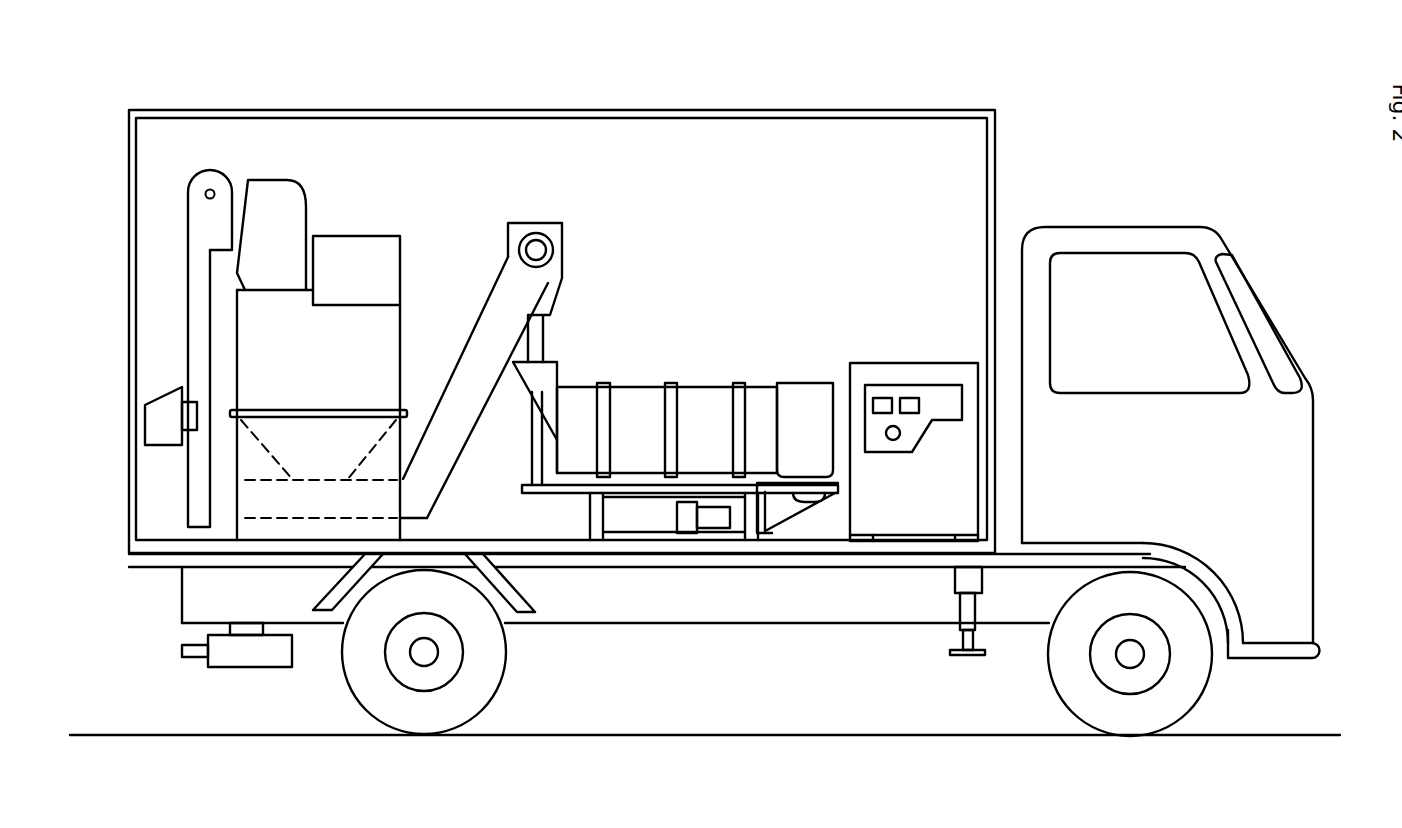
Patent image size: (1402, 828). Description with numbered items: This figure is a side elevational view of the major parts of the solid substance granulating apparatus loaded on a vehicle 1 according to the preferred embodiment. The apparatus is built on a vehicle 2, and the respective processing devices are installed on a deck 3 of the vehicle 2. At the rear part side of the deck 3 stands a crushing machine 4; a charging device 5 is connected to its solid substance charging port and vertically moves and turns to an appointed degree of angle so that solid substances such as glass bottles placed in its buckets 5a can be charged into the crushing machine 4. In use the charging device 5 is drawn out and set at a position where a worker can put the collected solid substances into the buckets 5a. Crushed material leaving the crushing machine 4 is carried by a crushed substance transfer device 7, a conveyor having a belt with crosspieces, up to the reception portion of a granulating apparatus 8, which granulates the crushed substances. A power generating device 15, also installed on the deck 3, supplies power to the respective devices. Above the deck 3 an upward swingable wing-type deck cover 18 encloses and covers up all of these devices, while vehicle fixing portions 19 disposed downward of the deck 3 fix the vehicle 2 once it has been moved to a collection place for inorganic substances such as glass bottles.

The solid substance granulating apparatus loaded on a vehicle 1 is at (1090, 102).
The vehicle 2 is at (1136, 225).
The deck 3 is at (603, 568).
The crushing machine 4 is at (358, 258).
The charging device 5 is at (197, 265).
The buckets 5a is at (155, 428).
The crushed substance transfer device 7 is at (475, 373).
The granulating apparatus 8 is at (688, 412).
The power generating device 15 is at (910, 362).
The deck cover 18 is at (293, 108).
The vehicle fixing portion 19 is at (242, 658).